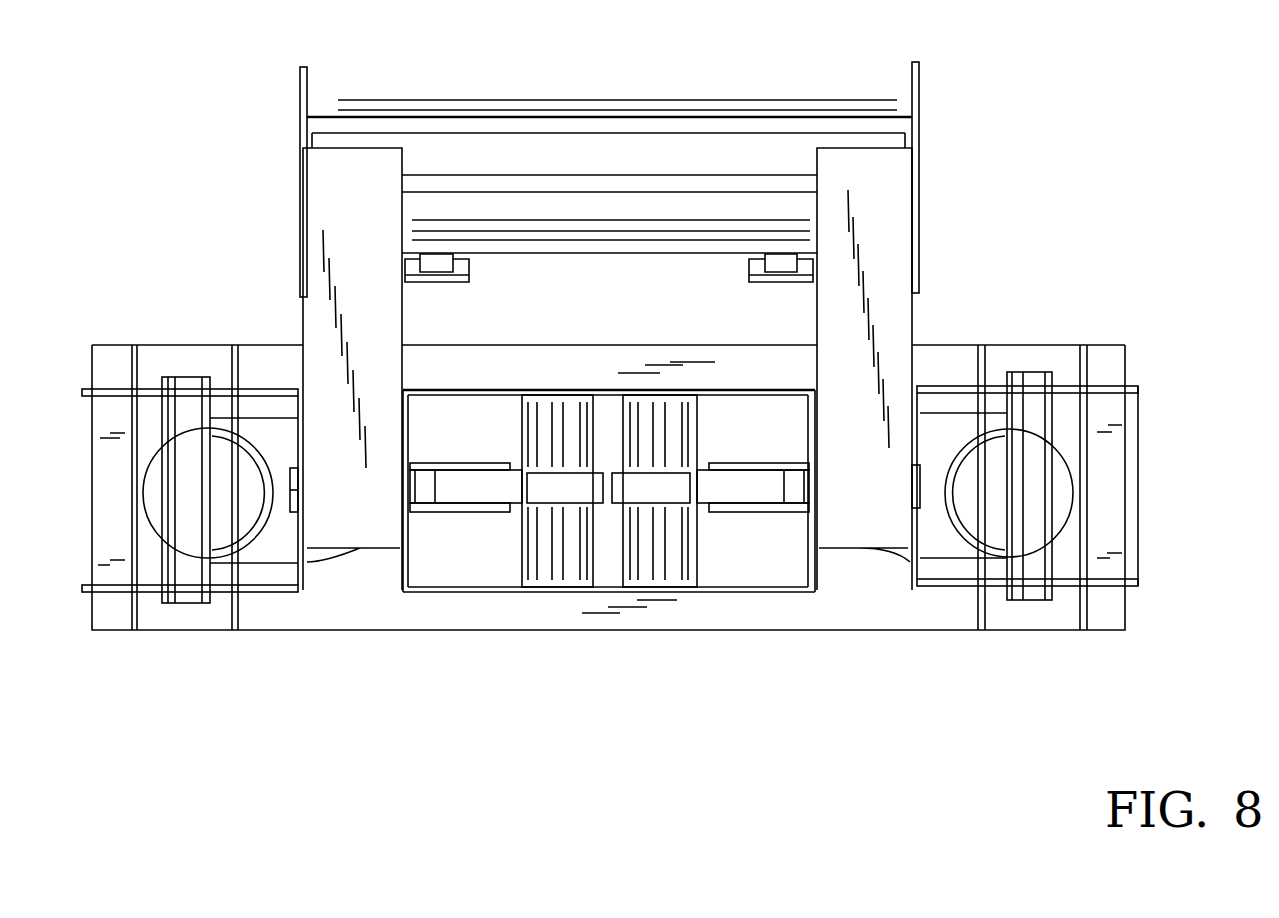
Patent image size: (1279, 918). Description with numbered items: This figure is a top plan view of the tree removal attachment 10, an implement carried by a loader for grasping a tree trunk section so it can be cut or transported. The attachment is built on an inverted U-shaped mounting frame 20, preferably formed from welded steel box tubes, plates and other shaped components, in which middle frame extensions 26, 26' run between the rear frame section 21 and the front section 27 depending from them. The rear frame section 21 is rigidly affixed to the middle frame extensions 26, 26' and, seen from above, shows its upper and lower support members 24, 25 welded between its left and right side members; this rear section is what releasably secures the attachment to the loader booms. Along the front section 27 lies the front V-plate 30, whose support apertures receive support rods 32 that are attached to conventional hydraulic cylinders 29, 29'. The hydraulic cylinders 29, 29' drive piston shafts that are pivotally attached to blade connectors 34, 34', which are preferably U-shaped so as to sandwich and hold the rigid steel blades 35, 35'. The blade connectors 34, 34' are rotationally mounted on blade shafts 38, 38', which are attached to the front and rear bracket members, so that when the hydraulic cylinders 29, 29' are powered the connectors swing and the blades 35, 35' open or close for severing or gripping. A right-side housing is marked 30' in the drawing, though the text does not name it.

The tree removal attachment 10 is at (1168, 158).
The inverted U-shaped mounting frame 20 is at (690, 72).
The rear frame section 21 is at (286, 197).
The upper support member 24 is at (455, 90).
The lower support member 25 is at (550, 240).
The middle frame extension 26 is at (346, 369).
The middle frame extension 26' is at (868, 369).
The front section 27 is at (430, 644).
The hydraulic cylinder 29 is at (223, 556).
The hydraulic cylinder 29' is at (986, 557).
The front V-plate 30 is at (448, 551).
The right housing 30' is at (1027, 435).
The support rod 32 is at (193, 603).
The blade connector 34 is at (460, 516).
The blade connector 34' is at (759, 516).
The blade 35 is at (466, 520).
The blade 35' is at (753, 520).
The blade shaft 38 is at (560, 541).
The blade shaft 38' is at (666, 537).